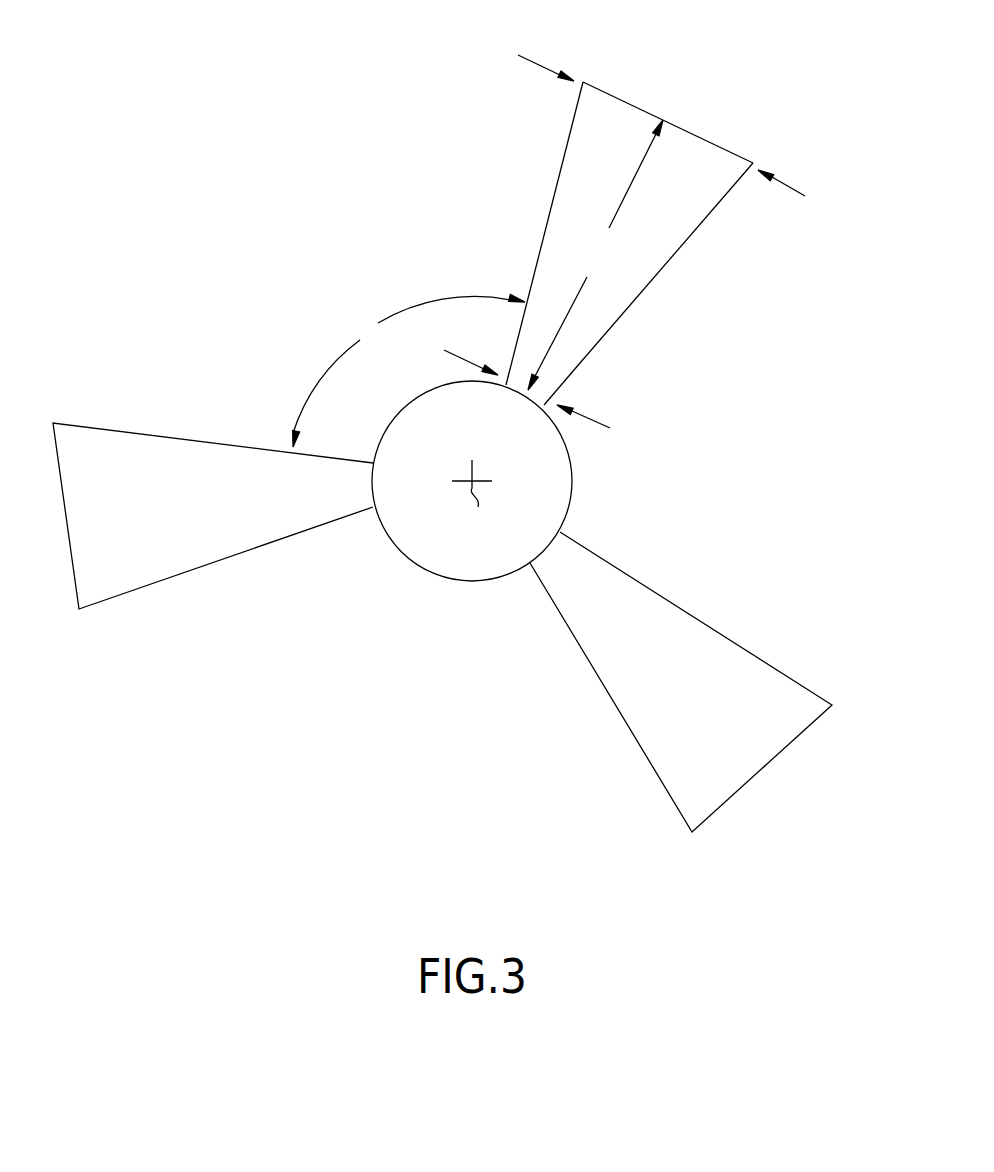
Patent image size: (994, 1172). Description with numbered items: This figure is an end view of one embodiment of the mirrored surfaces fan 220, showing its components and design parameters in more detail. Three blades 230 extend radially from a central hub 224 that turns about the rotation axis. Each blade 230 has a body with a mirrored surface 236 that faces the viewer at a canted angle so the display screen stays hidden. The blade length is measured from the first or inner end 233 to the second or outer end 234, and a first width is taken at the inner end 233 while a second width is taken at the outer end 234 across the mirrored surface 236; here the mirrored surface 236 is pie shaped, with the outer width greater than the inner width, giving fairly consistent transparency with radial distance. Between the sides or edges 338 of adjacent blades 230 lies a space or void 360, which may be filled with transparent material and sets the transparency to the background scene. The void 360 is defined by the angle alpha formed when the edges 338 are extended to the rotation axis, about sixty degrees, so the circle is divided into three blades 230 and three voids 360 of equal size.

The mirrored surfaces fan 220 is at (360, 640).
The hub 224 is at (498, 580).
The blade 230 is at (644, 244).
The first/inner end 233 is at (558, 393).
The second/outer end 234 is at (665, 121).
The mirrored surface 236 is at (608, 305).
The side/edge 338 is at (551, 210).
The space/void 360 is at (340, 292).